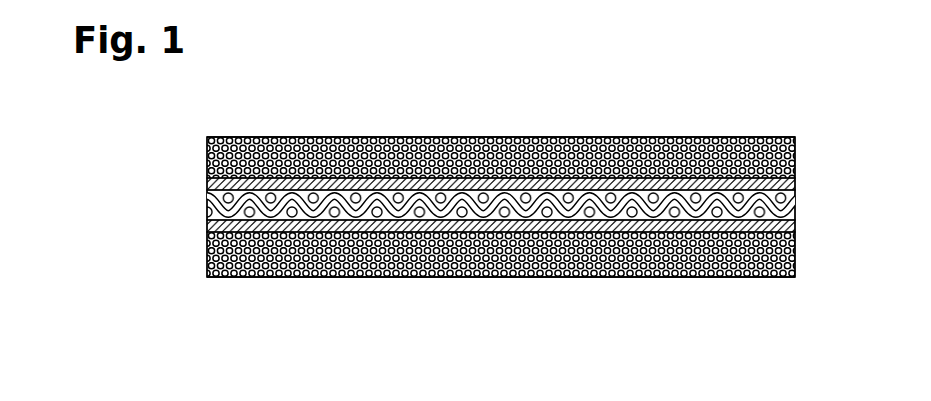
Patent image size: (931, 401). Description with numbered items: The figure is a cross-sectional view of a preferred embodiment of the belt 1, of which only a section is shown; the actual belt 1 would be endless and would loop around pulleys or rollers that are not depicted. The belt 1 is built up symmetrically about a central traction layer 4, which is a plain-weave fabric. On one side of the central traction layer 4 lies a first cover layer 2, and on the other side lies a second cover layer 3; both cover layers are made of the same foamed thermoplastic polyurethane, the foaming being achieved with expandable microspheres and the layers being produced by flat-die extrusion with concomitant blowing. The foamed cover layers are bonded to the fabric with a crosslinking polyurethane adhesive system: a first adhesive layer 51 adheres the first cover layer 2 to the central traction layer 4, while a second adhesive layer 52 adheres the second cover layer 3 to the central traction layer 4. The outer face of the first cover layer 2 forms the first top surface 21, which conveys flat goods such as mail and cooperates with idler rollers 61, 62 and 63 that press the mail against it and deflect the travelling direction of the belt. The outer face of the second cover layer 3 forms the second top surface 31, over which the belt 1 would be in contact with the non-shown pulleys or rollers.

The belt 1 is at (563, 103).
The first cover layer 2 is at (207, 140).
The first top surface 21 is at (363, 127).
The second cover layer 3 is at (207, 262).
The second top surface 31 is at (338, 284).
The central traction layer 4 is at (207, 207).
The first adhesive layer 51 is at (207, 182).
The second adhesive layer 52 is at (207, 225).
The roller 61 is at (388, 393).
The roller 62 is at (530, 396).
The roller 63 is at (685, 393).